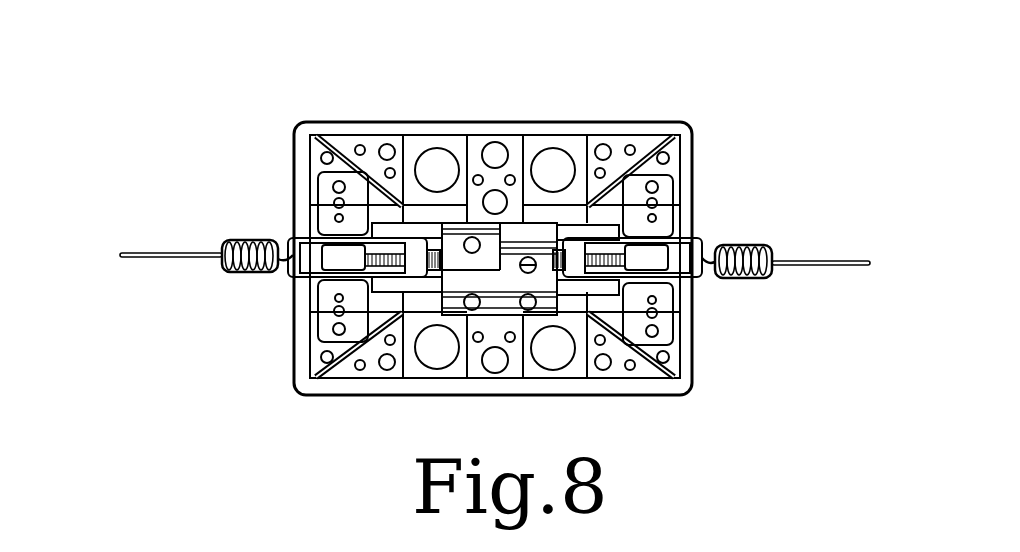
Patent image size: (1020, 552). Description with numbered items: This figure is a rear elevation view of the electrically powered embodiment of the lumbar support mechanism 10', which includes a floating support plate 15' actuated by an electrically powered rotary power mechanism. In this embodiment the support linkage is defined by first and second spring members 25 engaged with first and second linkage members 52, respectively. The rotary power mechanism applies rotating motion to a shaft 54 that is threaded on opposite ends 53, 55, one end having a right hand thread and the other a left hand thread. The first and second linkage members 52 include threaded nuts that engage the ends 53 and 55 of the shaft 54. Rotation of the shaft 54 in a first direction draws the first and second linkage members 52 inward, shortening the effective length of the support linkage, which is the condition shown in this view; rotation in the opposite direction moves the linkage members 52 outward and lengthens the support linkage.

The lumbar support mechanism 10' is at (493, 201).
The floating support plate 15' is at (495, 216).
The spring members 25 is at (167, 253).
The linkage members 52 is at (290, 240).
The threaded end of shaft 53 is at (633, 262).
The shaft 54 is at (390, 266).
The threaded end of shaft 55 is at (378, 273).